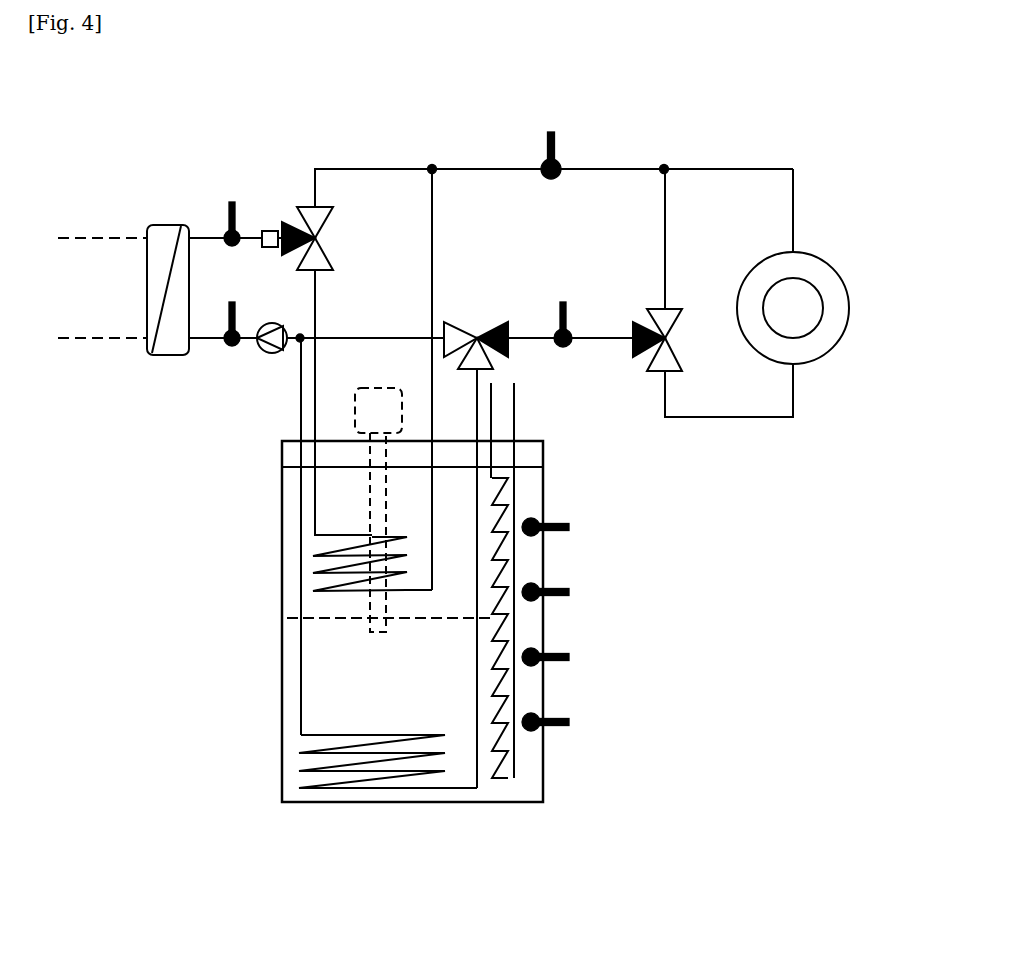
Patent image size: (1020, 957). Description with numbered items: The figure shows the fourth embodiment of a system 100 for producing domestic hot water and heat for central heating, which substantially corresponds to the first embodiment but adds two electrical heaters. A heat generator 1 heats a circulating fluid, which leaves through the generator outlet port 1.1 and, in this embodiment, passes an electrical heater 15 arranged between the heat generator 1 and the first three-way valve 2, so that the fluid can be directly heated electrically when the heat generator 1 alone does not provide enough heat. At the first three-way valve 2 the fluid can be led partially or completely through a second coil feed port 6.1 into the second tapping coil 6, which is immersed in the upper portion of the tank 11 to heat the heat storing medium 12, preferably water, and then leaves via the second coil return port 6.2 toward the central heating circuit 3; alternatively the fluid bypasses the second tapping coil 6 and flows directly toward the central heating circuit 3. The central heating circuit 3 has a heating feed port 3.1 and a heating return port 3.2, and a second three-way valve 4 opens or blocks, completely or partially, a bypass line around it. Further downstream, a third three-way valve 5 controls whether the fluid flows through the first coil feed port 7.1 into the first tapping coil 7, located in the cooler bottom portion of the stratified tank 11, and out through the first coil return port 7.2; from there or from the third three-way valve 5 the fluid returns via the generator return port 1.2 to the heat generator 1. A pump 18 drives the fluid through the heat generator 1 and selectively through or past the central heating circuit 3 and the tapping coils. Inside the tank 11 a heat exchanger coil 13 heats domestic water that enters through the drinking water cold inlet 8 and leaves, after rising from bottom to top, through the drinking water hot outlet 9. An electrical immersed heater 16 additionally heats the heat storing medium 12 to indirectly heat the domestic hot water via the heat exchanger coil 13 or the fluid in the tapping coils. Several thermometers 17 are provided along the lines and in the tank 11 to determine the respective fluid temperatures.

The heat generator 1 is at (147, 278).
The generator outlet port 1.1 is at (203, 237).
The generator return port 1.2 is at (205, 342).
The first three-way valve 2 is at (316, 205).
The central heating circuit 3 is at (830, 262).
The heating feed port 3.1 is at (793, 204).
The heating return port 3.2 is at (793, 378).
The second three-way valve 4 is at (660, 305).
The third three-way valve 5 is at (485, 325).
The second tapping coil 6 is at (335, 540).
The second coil feed port 6.1 is at (317, 432).
The second coil return port 6.2 is at (433, 405).
The first tapping coil 7 is at (327, 737).
The first coil feed port 7.1 is at (477, 384).
The first coil return port 7.2 is at (300, 412).
The drinking water cold inlet 8 is at (513, 420).
The drinking water hot outlet 9 is at (491, 392).
The tank 11 is at (282, 782).
The heat storing medium 12 is at (317, 650).
The heat exchanger coil 13 is at (505, 757).
The electrical heater 15 is at (268, 250).
The electrical immersed heater 16 is at (372, 630).
The thermometer 17 is at (227, 216).
The pump 18 is at (270, 355).
The system 100 is at (692, 797).